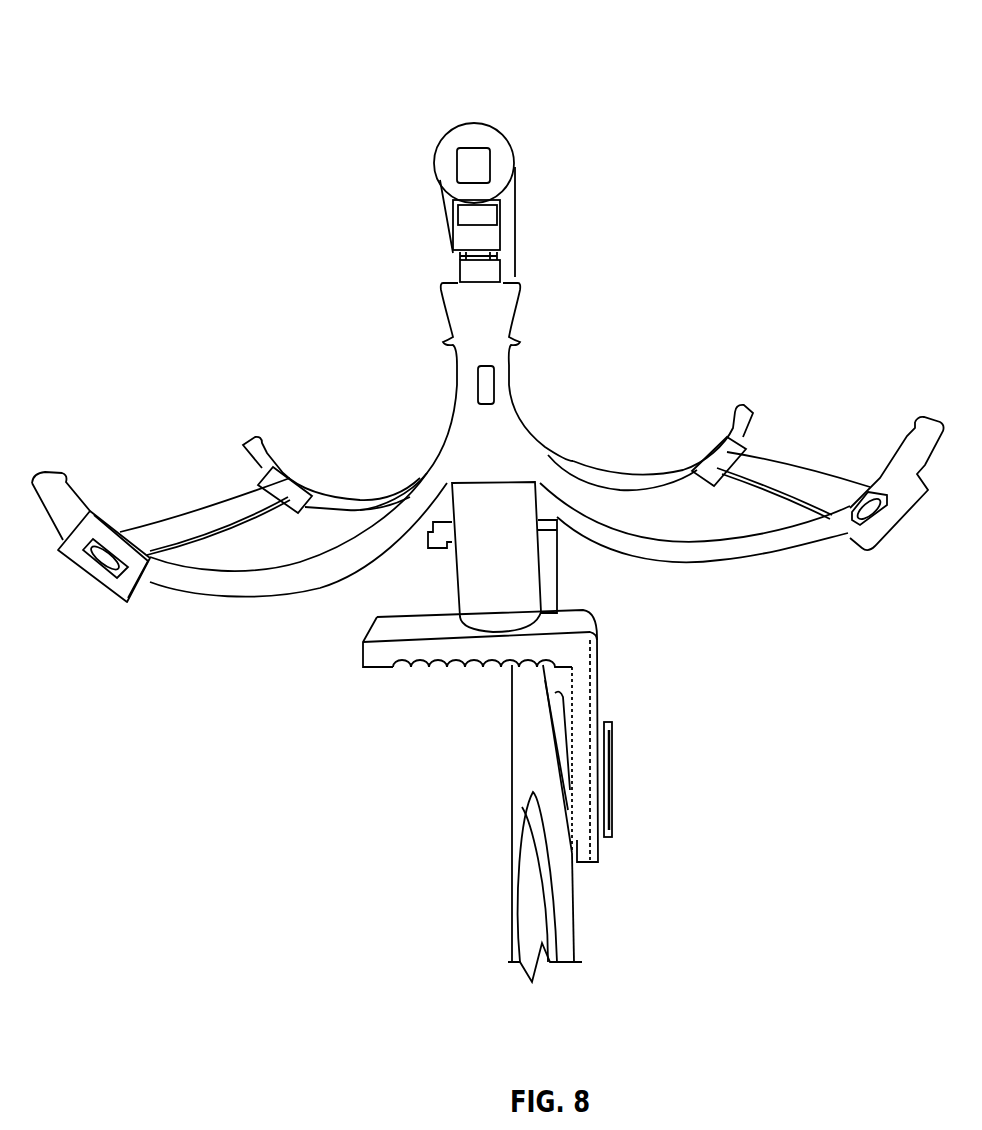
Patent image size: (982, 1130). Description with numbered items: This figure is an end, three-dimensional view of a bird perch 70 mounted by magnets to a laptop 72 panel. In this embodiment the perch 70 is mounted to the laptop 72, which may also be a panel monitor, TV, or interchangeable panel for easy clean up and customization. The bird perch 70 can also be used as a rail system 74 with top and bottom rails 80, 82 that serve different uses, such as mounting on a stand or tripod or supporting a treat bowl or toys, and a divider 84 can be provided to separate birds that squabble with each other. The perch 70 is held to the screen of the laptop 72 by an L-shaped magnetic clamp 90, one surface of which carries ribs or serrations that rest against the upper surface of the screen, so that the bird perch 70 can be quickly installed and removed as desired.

The bird perch 70 is at (603, 322).
The laptop 72 is at (523, 857).
The rail system 74 is at (685, 428).
The rail 80 is at (192, 523).
The rail 82 is at (798, 480).
The divider 84 is at (485, 137).
The magnetic clamp 90 is at (587, 683).